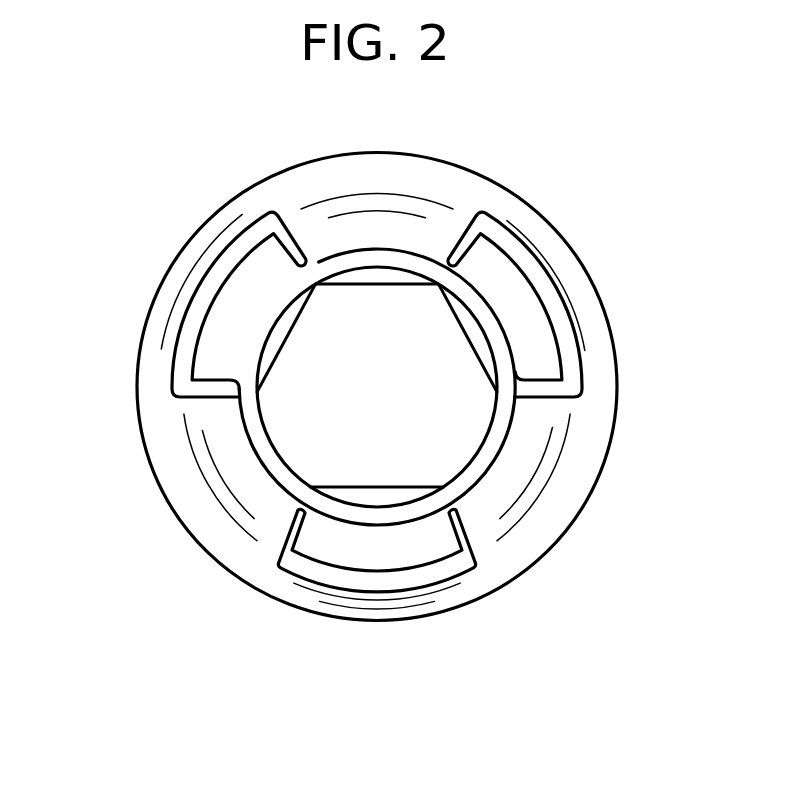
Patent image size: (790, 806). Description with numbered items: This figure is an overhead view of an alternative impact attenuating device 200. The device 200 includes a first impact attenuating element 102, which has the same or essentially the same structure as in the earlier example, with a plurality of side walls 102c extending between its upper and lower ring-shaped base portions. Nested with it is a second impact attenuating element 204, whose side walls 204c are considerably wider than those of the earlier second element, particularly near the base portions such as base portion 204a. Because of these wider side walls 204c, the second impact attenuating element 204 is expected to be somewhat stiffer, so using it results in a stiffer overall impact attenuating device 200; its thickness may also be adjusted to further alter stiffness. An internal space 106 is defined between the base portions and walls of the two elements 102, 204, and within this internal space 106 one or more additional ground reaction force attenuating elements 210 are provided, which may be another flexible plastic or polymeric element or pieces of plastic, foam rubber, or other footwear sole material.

The impact attenuating device 200 is at (600, 232).
The first impact attenuating element 102 is at (450, 182).
The side walls 102c is at (380, 230).
The internal space 106 is at (278, 319).
The second impact attenuating element 204 is at (317, 580).
The base portion 204a is at (473, 472).
The side walls 204c is at (202, 293).
The ground reaction force attenuating element 210 is at (433, 413).